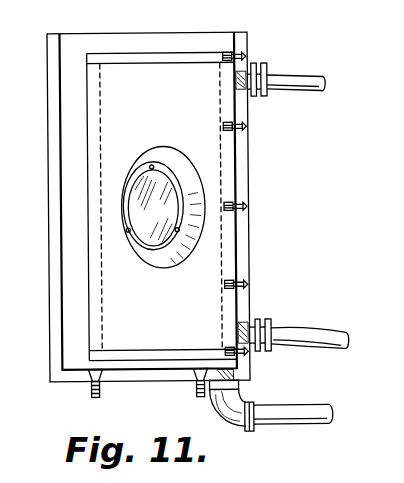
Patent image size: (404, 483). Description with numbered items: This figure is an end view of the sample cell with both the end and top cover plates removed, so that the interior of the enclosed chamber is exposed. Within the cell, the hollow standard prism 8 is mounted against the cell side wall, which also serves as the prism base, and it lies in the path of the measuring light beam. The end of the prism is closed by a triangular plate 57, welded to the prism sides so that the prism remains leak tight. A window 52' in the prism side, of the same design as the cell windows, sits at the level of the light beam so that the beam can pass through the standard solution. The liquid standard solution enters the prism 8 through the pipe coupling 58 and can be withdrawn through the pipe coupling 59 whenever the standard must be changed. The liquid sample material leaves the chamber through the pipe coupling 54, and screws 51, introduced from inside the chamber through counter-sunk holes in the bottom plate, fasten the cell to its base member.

The hollow standard prism 8 is at (206, 151).
The triangular plate 57 is at (131, 60).
The window 52' is at (208, 206).
The pipe coupling 58 is at (263, 65).
The pipe coupling 59 is at (265, 320).
The pipe coupling 54 is at (240, 401).
The screw 51 is at (195, 388).